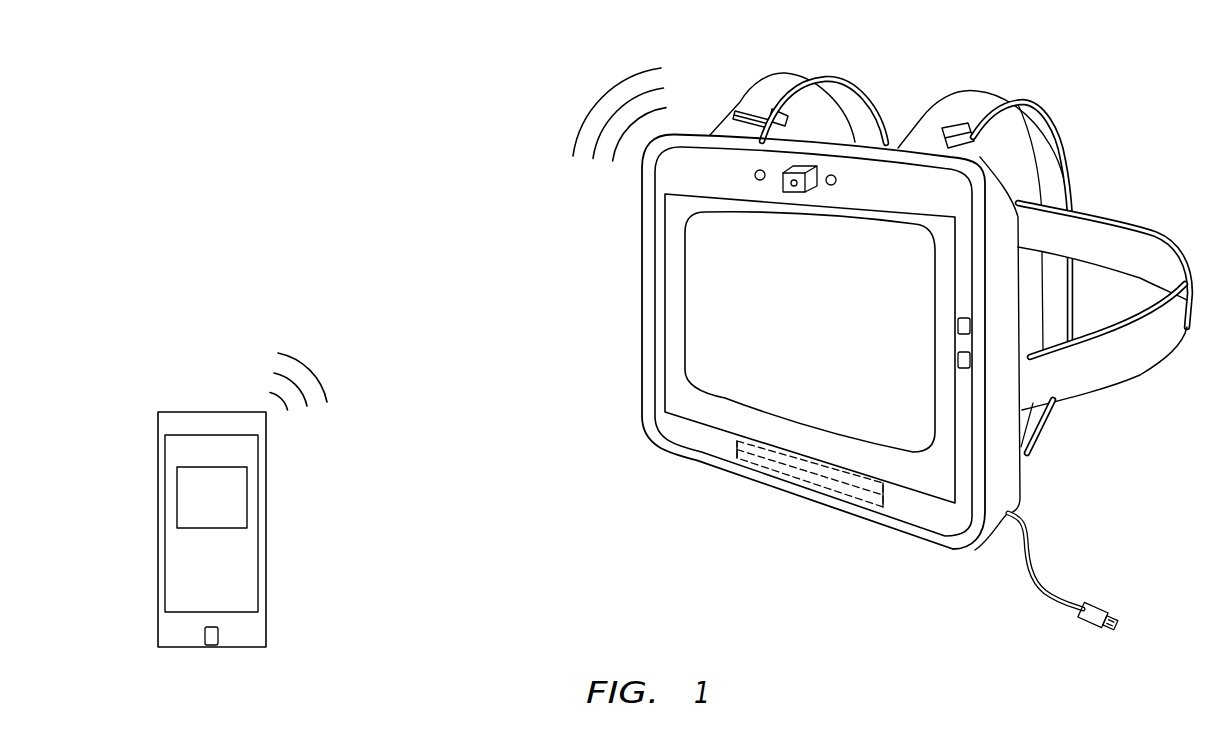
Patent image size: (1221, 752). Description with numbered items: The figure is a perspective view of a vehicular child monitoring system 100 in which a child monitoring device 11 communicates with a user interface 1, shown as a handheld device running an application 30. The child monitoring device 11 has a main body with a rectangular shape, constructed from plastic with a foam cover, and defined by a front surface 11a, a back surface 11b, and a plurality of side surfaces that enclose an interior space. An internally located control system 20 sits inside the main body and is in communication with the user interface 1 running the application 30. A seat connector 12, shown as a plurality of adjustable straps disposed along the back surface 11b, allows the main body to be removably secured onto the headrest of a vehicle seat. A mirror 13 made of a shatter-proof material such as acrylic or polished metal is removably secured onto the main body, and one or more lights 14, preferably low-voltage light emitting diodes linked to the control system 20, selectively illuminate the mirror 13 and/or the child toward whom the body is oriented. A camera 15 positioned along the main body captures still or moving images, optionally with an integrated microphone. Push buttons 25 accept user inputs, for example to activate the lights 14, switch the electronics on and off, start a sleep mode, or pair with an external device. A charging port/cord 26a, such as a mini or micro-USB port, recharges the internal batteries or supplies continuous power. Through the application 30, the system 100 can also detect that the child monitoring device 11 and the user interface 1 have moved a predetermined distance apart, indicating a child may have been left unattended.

The system 100 is at (300, 150).
The user interface 1 is at (158, 545).
The application 30 is at (247, 500).
The child monitoring device 11 is at (1103, 447).
The front surface 11a is at (698, 169).
The back surface 11b is at (893, 147).
The seat connector 12 is at (1120, 221).
The mirror 13 is at (822, 321).
The lights 14 is at (830, 174).
The camera 15 is at (791, 195).
The control system 20 is at (794, 480).
The push buttons 25 is at (958, 360).
The charging port/cord 26a is at (1052, 600).